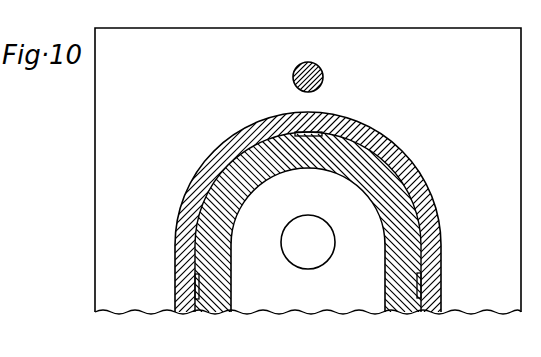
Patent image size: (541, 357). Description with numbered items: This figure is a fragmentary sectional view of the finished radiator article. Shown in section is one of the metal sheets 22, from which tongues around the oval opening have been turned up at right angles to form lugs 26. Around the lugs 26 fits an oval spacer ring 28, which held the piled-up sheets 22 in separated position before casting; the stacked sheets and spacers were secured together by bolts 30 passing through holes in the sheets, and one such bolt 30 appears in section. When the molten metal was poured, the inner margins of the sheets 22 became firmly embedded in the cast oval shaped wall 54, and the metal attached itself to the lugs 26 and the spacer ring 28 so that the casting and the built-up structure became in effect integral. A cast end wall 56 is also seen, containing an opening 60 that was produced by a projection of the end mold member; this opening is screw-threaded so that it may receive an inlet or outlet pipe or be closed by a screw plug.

The metal sheet 22 is at (143, 37).
The lug 26 is at (195, 287).
The spacer ring 28 is at (383, 152).
The bolt 30 is at (325, 77).
The cast oval shaped wall 54 is at (383, 182).
The cast end wall 56 is at (355, 226).
The opening 60 is at (320, 247).